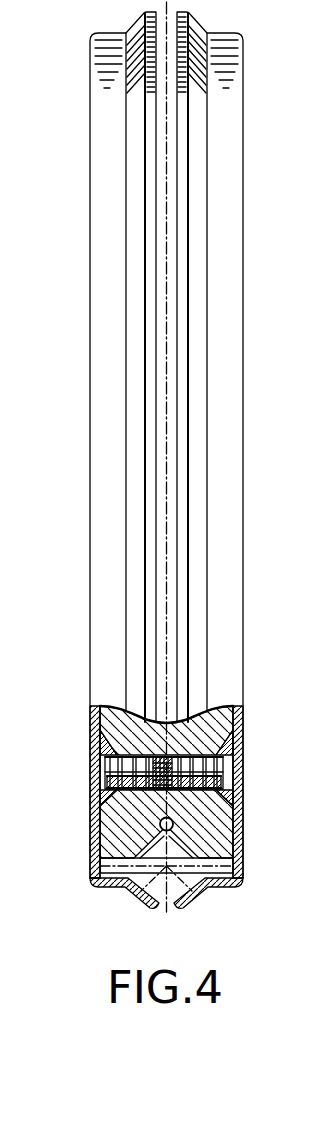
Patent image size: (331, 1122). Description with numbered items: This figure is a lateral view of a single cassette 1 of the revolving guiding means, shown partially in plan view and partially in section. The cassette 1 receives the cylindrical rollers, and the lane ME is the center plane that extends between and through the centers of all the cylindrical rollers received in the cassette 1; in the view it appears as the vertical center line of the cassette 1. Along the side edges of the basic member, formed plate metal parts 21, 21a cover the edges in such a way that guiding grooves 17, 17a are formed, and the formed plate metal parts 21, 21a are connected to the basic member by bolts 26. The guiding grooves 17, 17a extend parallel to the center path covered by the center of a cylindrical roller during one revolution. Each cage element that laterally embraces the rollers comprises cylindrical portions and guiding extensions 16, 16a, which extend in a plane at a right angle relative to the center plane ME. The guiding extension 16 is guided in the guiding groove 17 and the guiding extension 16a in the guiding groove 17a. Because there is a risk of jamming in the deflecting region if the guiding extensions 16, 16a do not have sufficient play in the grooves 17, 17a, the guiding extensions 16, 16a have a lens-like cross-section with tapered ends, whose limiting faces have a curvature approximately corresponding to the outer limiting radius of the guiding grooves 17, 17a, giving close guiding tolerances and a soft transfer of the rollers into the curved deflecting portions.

The cassette 1 is at (107, 571).
The lane (center plane) ME is at (166, 523).
The bolts 26 is at (104, 757).
The formed plate metal part 21 is at (99, 815).
The formed plate metal part 21a is at (235, 813).
The guiding groove 17 is at (99, 870).
The guiding groove 17a is at (230, 868).
The guiding extension 16 is at (97, 888).
The guiding extension 16a is at (241, 882).